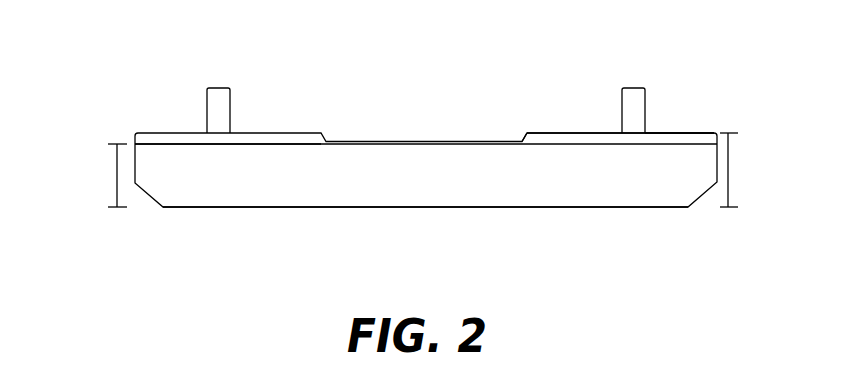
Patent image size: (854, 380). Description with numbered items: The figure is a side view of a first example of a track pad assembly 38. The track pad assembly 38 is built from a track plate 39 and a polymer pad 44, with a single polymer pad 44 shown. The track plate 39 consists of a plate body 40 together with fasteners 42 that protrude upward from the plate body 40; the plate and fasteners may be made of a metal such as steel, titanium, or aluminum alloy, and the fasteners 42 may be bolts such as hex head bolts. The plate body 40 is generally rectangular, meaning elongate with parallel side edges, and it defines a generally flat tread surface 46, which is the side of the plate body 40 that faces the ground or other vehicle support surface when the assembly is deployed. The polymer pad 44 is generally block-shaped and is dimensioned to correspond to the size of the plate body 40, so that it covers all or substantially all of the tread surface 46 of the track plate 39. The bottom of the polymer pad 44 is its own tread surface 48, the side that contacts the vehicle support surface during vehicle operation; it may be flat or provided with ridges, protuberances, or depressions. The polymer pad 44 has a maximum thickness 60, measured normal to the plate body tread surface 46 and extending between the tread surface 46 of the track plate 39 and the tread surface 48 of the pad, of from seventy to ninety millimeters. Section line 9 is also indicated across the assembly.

The section line 9- 9 is at (274, 233).
The track pad assembly 38 is at (663, 78).
The track plate 39 is at (657, 123).
The plate body 40 is at (538, 131).
The fasteners 42 is at (207, 113).
The polymer pad 44 is at (648, 187).
The tread surface 46 is at (315, 145).
The tread surface of the pad 48 is at (557, 208).
The maximum thickness 60 is at (115, 176).